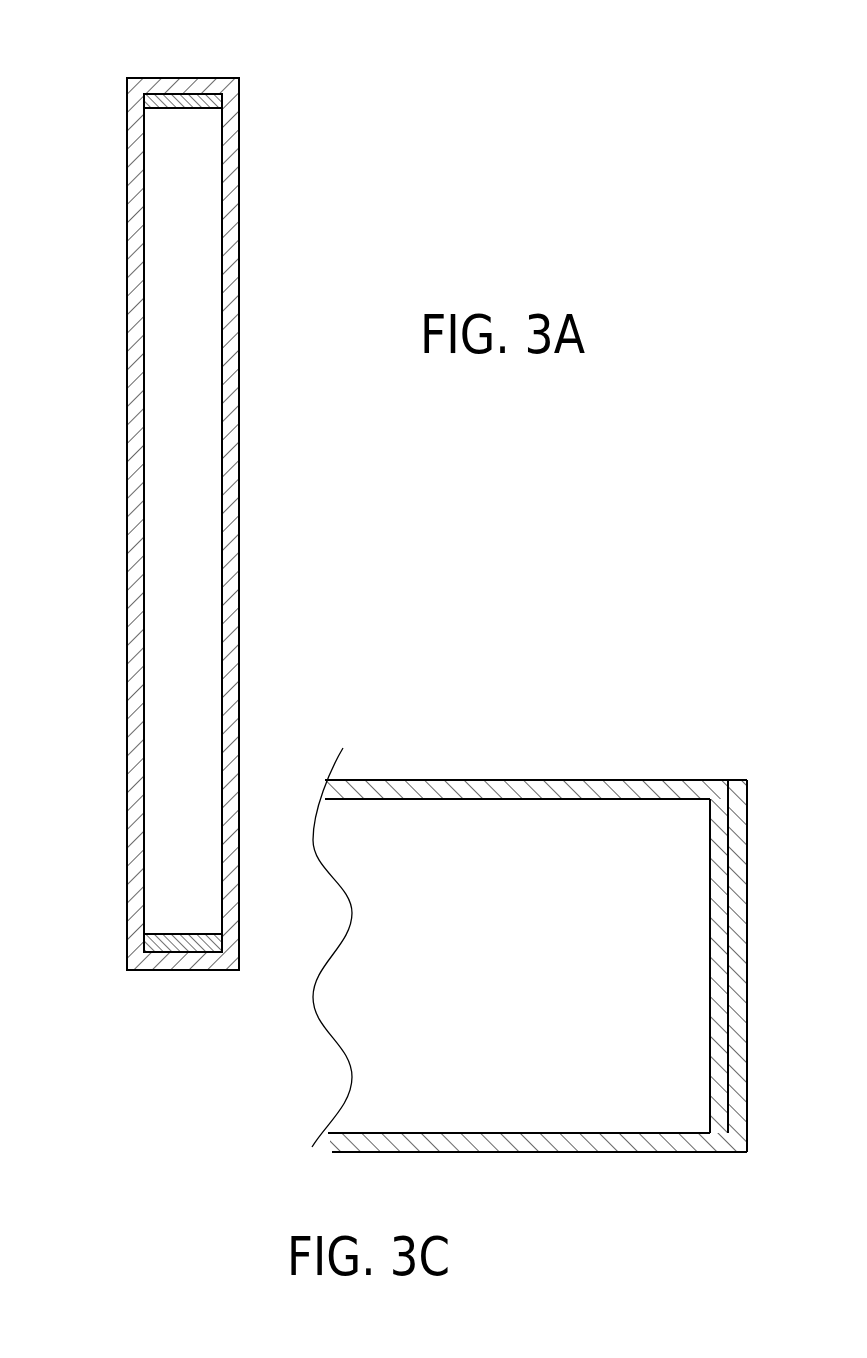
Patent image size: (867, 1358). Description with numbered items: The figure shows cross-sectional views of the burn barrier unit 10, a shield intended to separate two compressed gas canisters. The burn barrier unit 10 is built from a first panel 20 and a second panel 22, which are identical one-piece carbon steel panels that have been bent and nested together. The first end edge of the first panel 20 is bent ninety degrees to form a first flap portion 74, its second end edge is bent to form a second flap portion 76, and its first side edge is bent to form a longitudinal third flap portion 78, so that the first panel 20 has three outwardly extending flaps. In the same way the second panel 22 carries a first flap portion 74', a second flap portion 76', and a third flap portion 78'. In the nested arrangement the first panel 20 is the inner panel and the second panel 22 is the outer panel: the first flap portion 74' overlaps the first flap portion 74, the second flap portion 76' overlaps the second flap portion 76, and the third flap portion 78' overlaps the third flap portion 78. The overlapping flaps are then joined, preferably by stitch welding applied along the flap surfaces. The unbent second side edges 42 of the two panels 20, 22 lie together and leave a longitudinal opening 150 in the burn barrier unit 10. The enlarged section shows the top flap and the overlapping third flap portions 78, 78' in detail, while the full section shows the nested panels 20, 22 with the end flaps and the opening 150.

In FIG. 3A, the burn barrier unit 10 is at (271, 462).
In FIG. 3C, the burn barrier unit 10 is at (426, 756).
In FIG. 3A, the first panel 20 is at (241, 245).
In FIG. 3C, the first panel 20 is at (492, 778).
In FIG. 3A, the second panel 22 is at (126, 222).
In FIG. 3C, the second panel 22 is at (575, 1152).
In FIG. 3A, the second side edge 42 is at (135, 328).
In FIG. 3A, the first flap portion 74 is at (212, 61).
In FIG. 3A, the first flap portion 74' is at (183, 64).
In FIG. 3A, the second flap portion 76 is at (183, 1000).
In FIG. 3A, the second flap portion 76' is at (175, 995).
In FIG. 3C, the third flap portion 78 is at (664, 912).
In FIG. 3C, the third flap portion 78' is at (776, 966).
In FIG. 3A, the longitudinal opening 150 is at (186, 202).